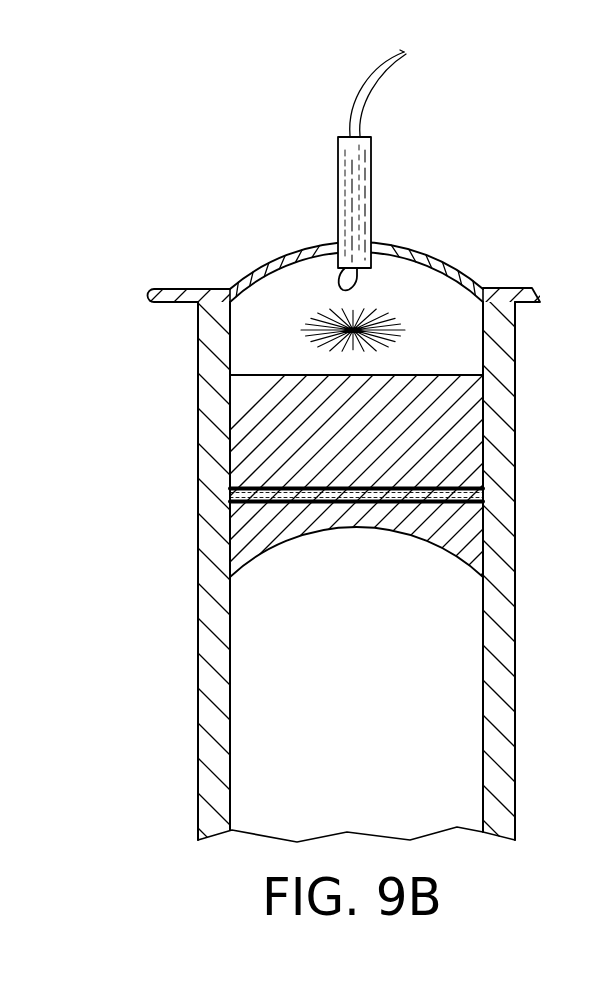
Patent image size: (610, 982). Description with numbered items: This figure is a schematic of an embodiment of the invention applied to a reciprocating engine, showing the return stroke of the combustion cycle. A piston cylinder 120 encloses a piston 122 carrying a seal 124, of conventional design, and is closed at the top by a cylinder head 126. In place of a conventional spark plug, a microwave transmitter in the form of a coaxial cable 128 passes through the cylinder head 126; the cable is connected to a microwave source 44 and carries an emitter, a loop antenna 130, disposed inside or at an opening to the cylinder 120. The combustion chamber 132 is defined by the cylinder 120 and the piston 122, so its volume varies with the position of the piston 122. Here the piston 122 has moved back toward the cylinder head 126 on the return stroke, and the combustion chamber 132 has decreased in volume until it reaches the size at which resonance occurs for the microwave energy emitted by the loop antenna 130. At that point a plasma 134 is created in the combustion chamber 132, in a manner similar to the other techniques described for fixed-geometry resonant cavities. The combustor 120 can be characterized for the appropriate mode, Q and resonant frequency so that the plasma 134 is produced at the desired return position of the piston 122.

The microwave source 44 is at (462, 87).
The piston cylinder 120 is at (500, 458).
The piston 122 is at (273, 448).
The seal 124 is at (257, 488).
The cylinder head 126 is at (436, 257).
The coaxial cable 128 is at (358, 192).
The loop antenna 130 is at (338, 280).
The combustion chamber 132 is at (466, 358).
The plasma 134 is at (290, 337).